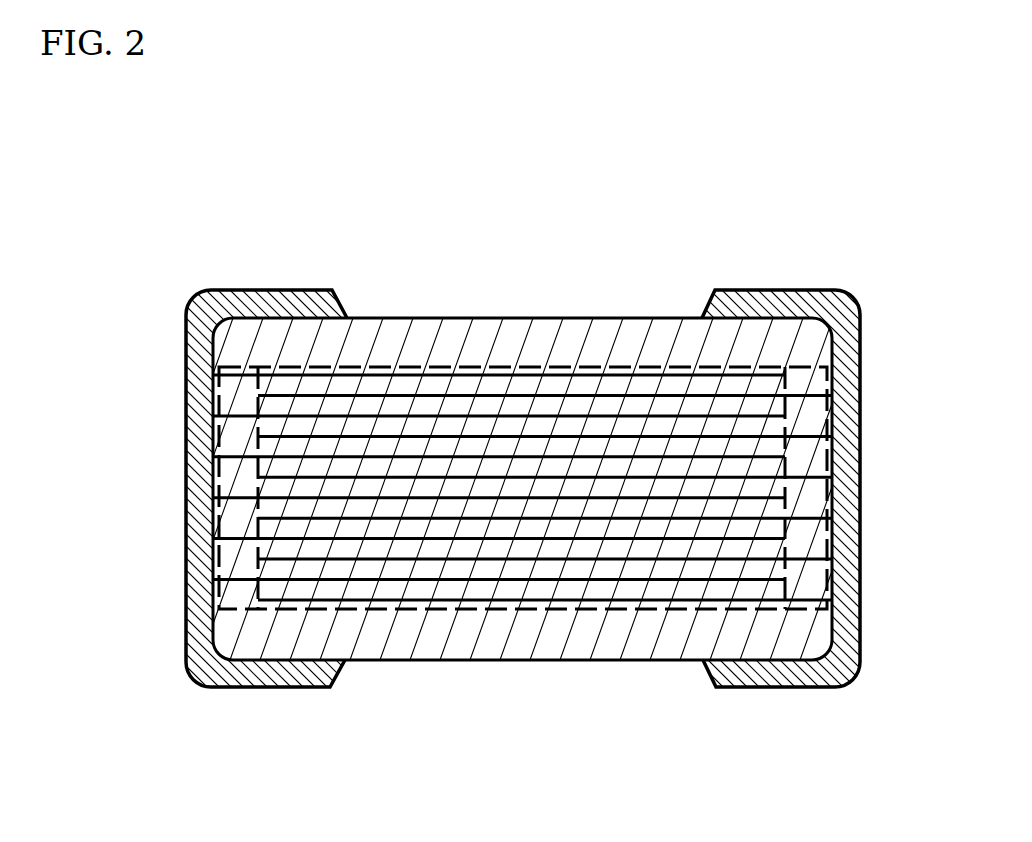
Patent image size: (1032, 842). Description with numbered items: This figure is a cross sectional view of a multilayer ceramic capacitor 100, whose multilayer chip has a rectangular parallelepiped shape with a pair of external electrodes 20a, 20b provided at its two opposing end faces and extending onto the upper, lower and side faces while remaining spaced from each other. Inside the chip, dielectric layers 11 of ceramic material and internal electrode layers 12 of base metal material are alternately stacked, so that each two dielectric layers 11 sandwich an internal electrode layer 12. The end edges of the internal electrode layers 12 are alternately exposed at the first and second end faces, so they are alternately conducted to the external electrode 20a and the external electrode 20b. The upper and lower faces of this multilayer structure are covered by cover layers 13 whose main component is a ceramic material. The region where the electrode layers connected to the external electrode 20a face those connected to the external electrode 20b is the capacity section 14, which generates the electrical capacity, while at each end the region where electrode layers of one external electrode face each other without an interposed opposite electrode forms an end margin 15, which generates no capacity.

The multilayer ceramic capacitor 100 is at (760, 208).
The external electrode 20a is at (212, 290).
The external electrode 20b is at (822, 290).
The cover layer 13 is at (414, 333).
The dielectric layer 11 is at (648, 563).
The internal electrode layer 12 is at (465, 543).
The capacity section 14 is at (547, 365).
The end margin 15 is at (240, 367).